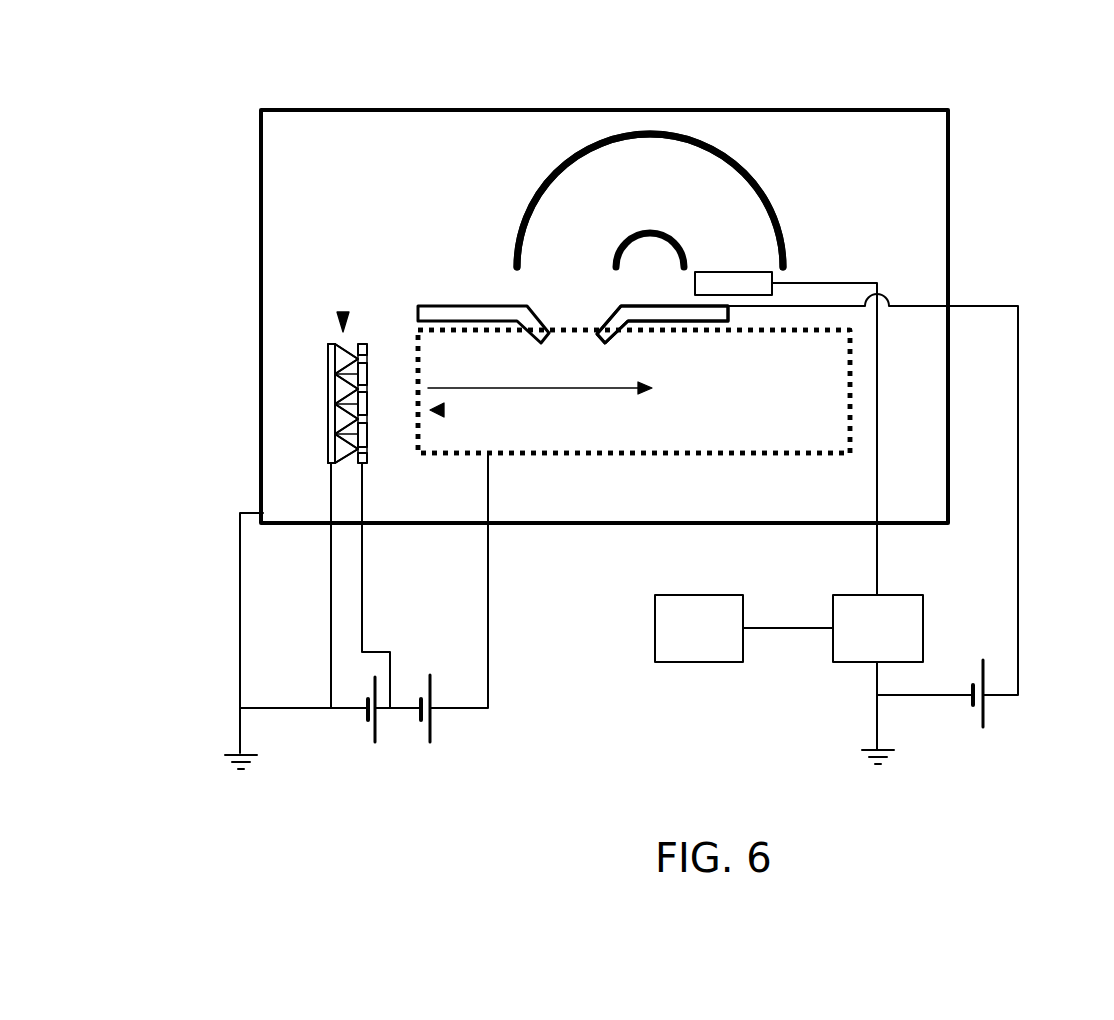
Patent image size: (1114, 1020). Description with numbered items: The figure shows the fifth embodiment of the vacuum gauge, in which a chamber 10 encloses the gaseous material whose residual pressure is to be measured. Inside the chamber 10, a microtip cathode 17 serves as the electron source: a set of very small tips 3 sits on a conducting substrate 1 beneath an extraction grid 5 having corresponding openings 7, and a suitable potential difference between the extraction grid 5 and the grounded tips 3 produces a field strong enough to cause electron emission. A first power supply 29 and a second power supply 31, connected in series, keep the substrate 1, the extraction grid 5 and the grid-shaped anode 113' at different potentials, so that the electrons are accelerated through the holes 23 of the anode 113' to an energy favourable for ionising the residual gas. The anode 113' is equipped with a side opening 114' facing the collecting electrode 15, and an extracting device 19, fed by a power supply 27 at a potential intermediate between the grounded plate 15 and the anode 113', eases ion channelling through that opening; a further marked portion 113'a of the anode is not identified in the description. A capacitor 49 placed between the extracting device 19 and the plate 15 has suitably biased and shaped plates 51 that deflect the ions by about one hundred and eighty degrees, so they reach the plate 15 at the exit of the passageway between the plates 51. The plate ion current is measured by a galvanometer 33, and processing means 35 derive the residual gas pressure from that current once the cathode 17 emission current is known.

The conducting substrate 1 is at (328, 348).
The tips 3 is at (327, 378).
The extraction grid 5 is at (362, 340).
The openings 7 is at (366, 455).
The chamber 10 is at (950, 222).
The collecting electrode 15 is at (733, 272).
The cathode 17 is at (343, 318).
The extracting device 19 is at (719, 322).
The holes 23 is at (414, 347).
The power supply 27 is at (992, 737).
The first power supply 29 is at (375, 756).
The second power supply 31 is at (454, 722).
The galvanometer 33 is at (865, 642).
The processing means 35 is at (686, 642).
The capacitor 49 is at (657, 194).
The plates 51 is at (714, 146).
The grid-shaped anode 113' is at (634, 391).
The trap entrance 113'a is at (503, 579).
The side opening 114' is at (573, 324).